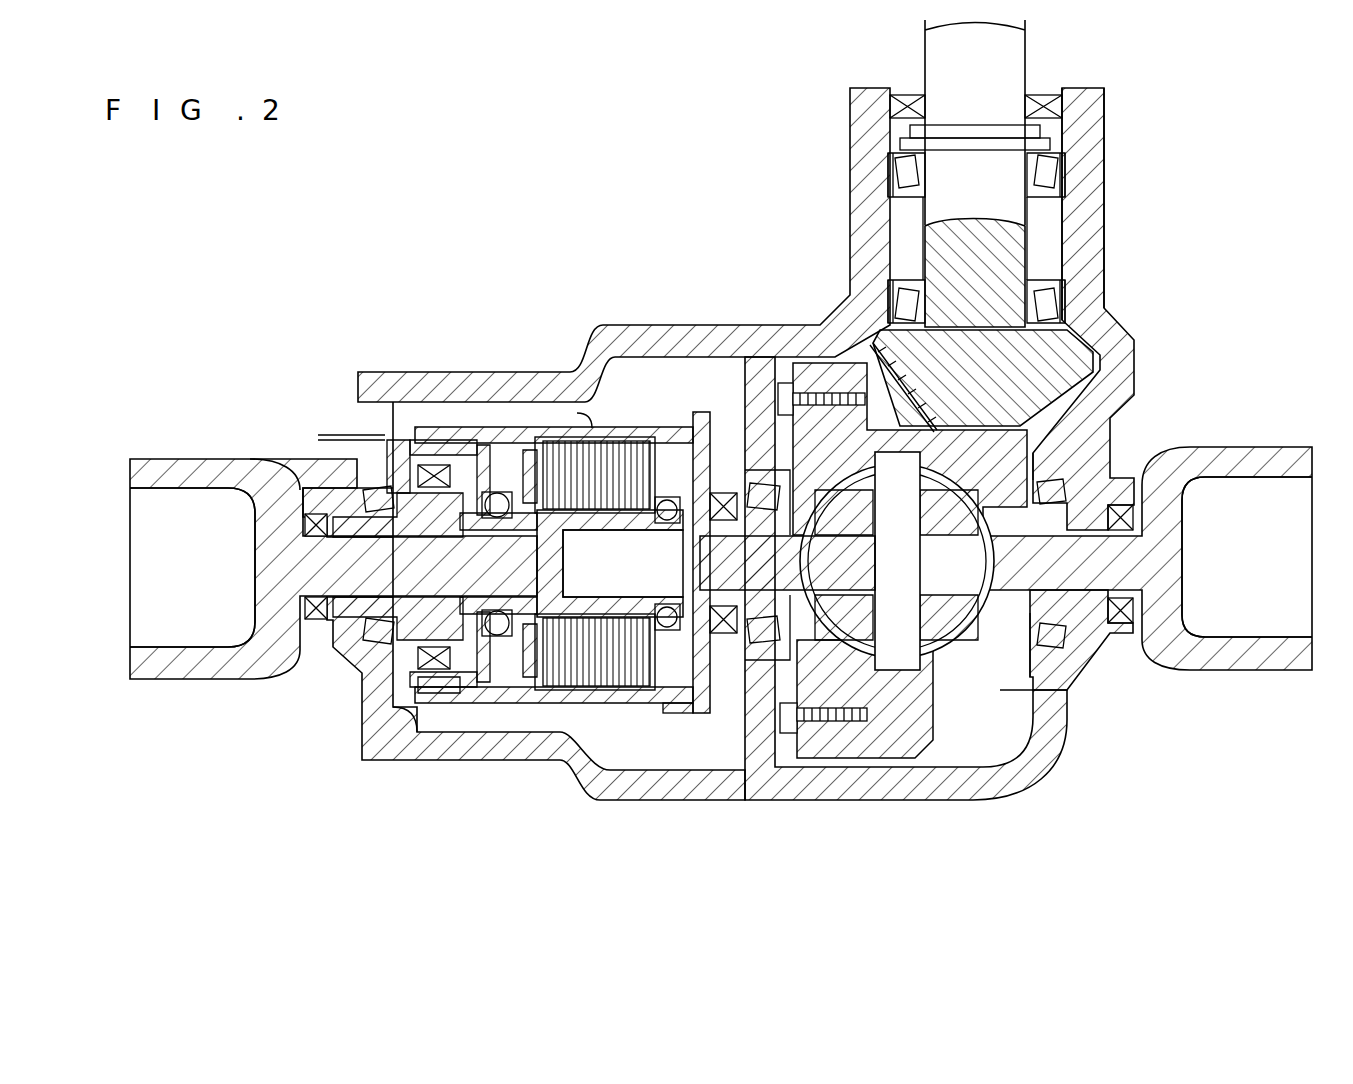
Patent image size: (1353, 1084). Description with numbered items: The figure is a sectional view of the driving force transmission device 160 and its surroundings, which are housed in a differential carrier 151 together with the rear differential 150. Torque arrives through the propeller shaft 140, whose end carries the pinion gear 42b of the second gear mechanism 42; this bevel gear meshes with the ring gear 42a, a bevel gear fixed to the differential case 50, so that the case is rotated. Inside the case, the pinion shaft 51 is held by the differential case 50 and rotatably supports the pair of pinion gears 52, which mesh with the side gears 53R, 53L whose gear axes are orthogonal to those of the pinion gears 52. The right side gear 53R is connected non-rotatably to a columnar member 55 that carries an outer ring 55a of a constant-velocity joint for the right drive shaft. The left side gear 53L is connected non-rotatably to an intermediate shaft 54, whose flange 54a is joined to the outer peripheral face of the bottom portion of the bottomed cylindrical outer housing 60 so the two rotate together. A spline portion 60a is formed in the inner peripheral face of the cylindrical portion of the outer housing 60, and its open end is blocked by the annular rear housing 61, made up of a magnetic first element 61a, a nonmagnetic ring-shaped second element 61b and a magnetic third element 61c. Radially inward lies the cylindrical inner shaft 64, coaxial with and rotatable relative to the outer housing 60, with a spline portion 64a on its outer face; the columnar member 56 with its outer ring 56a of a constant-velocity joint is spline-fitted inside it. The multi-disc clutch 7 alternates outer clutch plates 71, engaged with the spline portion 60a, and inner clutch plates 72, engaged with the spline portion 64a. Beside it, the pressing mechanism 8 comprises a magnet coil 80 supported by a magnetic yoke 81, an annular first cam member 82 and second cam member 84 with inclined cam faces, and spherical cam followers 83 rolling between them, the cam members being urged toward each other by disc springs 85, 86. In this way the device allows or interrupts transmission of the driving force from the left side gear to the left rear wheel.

The multi-disc clutch 7 is at (540, 250).
The pressing mechanism 8 is at (568, 722).
The second gear mechanism 42 is at (826, 245).
The ring gear 42a is at (840, 378).
The pinion gear 42b is at (880, 350).
The differential case 50 is at (1052, 690).
The pinion shaft 51 is at (897, 670).
The pinion gears 52 is at (1000, 497).
The left side gear 53L is at (835, 660).
The right side gear 53R is at (1030, 497).
The intermediate shaft 54 is at (715, 698).
The flange 54a is at (675, 713).
The columnar member 55 is at (1055, 575).
The outer ring 55a is at (1240, 662).
The columnar member 56 is at (330, 585).
The outer ring 56a is at (215, 672).
The outer housing 60 is at (700, 425).
The spline portion 60a is at (580, 417).
The rear housing 61 is at (548, 326).
The first element 61a is at (463, 490).
The second element 61b is at (513, 517).
The third element 61c is at (410, 487).
The inner shaft 64 is at (635, 612).
The spline portion 64a is at (578, 610).
The outer clutch plates 71 is at (572, 440).
The inner clutch plates 72 is at (583, 440).
The magnet coil 80 is at (440, 669).
The yoke 81 is at (370, 742).
The first cam member 82 is at (500, 668).
The cam followers 83 is at (492, 640).
The second cam member 84 is at (537, 662).
The disc spring 85 is at (468, 692).
The disc spring 86 is at (525, 690).
The propeller shaft 140 is at (1005, 72).
The rear differential 150 is at (975, 708).
The differential carrier 151 is at (1078, 190).
The driving force transmission device 160 is at (403, 412).